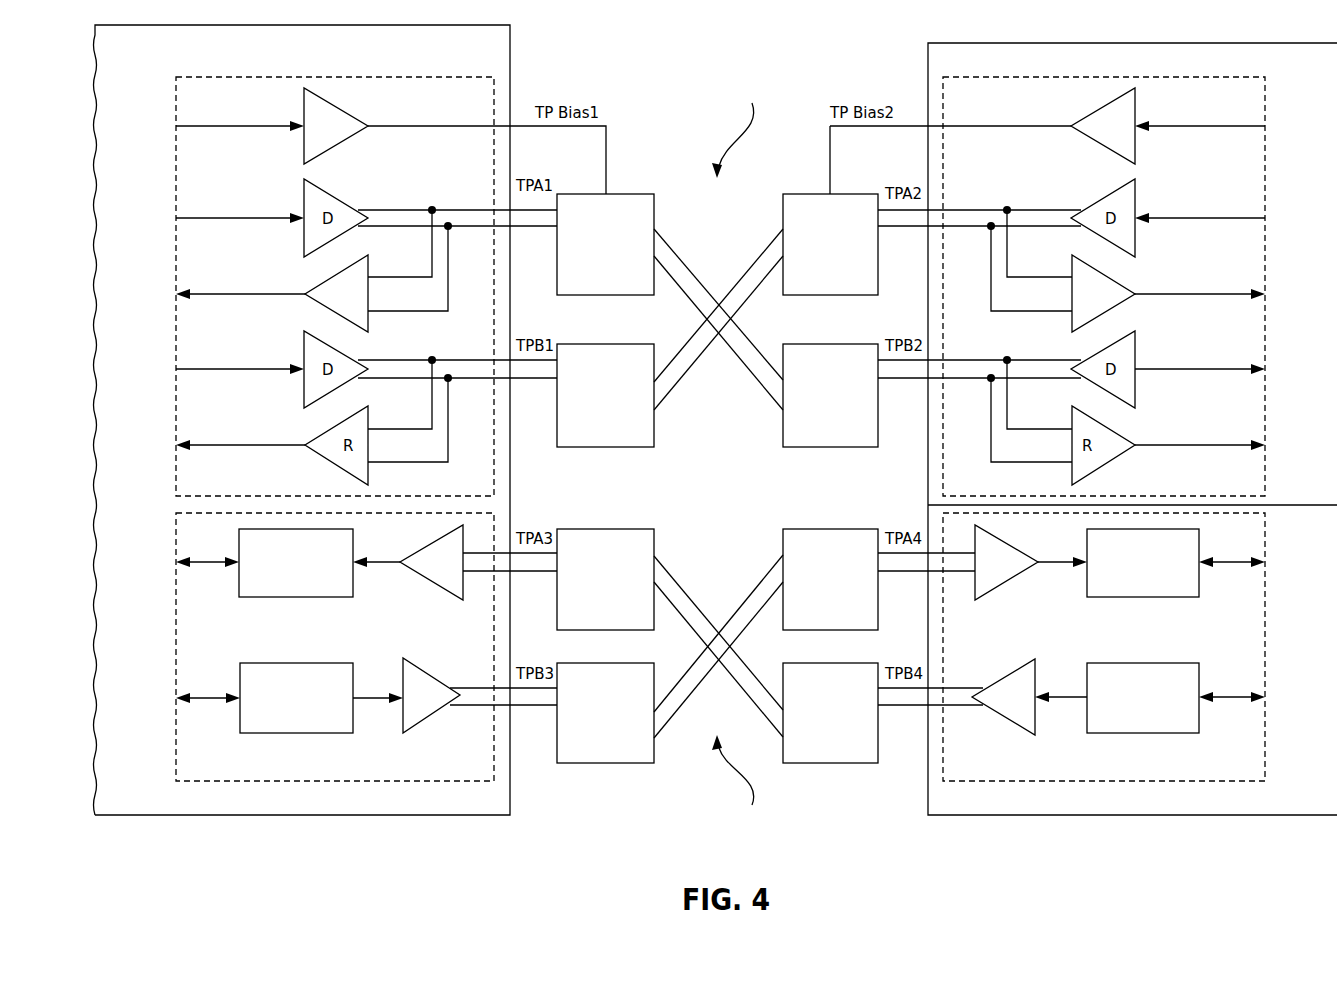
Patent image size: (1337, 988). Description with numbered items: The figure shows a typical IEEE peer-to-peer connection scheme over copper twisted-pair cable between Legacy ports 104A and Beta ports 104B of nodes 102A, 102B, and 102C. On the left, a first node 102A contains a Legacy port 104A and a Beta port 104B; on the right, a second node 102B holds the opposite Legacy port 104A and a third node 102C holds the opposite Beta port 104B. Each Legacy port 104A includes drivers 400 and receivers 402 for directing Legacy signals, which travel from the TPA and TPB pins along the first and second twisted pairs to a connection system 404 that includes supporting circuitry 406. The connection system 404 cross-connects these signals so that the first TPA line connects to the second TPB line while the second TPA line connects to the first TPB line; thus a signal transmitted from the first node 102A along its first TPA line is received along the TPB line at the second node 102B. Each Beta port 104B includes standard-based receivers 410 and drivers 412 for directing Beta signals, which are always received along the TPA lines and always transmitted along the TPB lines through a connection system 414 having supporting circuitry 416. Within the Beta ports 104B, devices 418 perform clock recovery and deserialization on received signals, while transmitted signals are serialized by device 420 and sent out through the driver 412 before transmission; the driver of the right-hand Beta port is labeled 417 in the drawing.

The first node 102A is at (510, 72).
The second node 102B is at (928, 72).
The third node 102C is at (928, 793).
The Legacy port 104A is at (200, 77).
The Beta port 104B is at (176, 548).
The driver 400 is at (352, 114).
The receiver 402 is at (369, 266).
The connection system 404 is at (737, 129).
The supporting circuitry 406 is at (633, 194).
The standard-based receiver 410 is at (433, 584).
The driver 412 is at (433, 676).
The connection system 414 is at (738, 782).
The supporting circuitry 416 is at (633, 529).
The beta driver 417 is at (1005, 677).
The clock recovery and deserialization device 418 is at (255, 597).
The serializer 420 is at (320, 663).